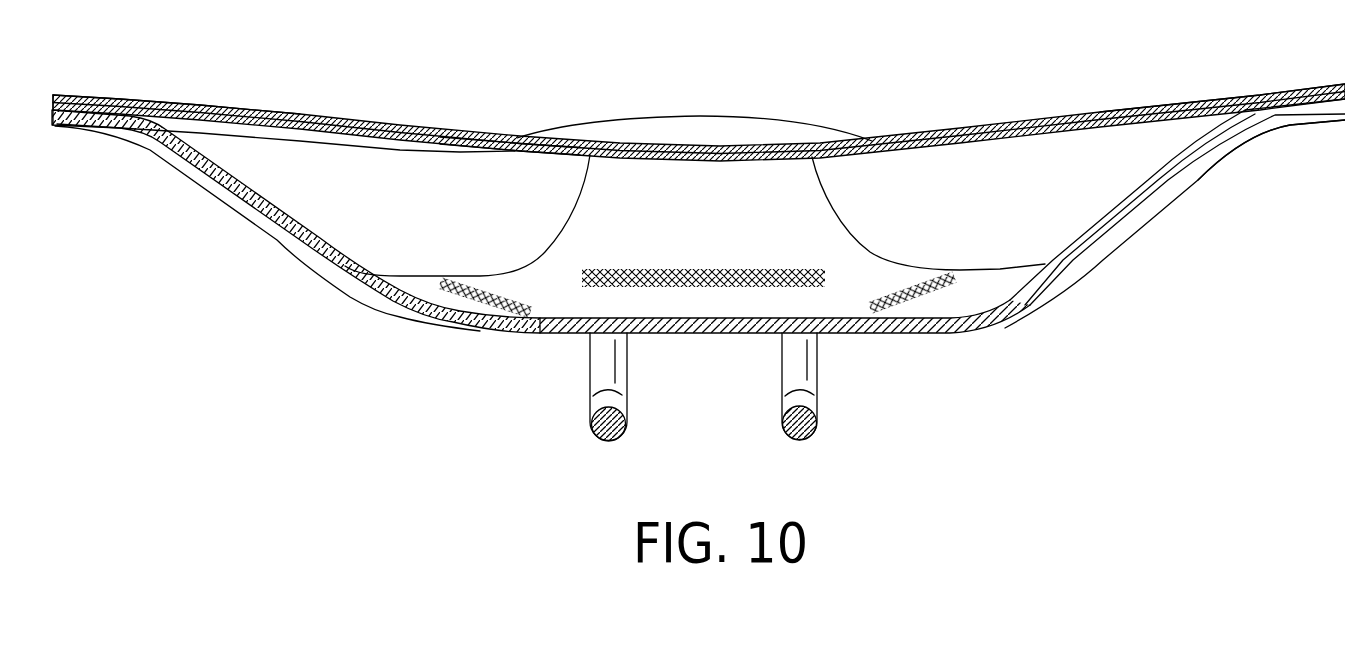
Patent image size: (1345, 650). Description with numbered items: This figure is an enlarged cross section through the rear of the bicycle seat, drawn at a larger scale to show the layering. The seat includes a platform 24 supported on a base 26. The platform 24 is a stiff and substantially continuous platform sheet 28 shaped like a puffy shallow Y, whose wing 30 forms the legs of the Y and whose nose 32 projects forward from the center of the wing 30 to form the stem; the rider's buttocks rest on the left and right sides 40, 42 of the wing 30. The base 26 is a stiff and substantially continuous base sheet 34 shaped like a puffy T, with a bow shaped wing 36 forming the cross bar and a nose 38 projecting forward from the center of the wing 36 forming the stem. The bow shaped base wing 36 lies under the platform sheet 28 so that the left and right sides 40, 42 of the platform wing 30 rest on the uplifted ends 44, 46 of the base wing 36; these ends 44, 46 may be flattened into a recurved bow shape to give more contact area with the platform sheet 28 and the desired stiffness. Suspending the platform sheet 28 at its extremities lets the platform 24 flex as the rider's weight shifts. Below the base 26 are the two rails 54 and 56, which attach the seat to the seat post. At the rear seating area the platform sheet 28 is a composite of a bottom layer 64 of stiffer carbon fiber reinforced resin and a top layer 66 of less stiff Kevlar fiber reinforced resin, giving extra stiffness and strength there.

The platform 24 is at (877, 136).
The base 26 is at (527, 257).
The platform sheet 28 is at (52, 103).
The wing 30 is at (305, 143).
The nose 32 is at (697, 127).
The base sheet 34 is at (315, 233).
The bow shaped wing 36 is at (1135, 223).
The nose 38 is at (812, 183).
The left side 40 is at (89, 95).
The right side 42 is at (1322, 87).
The uplifted end 44 is at (80, 129).
The uplifted end 46 is at (1322, 121).
The rail 54 is at (810, 370).
The rail 56 is at (600, 371).
The bottom layer 64 is at (518, 157).
The top layer 66 is at (500, 142).